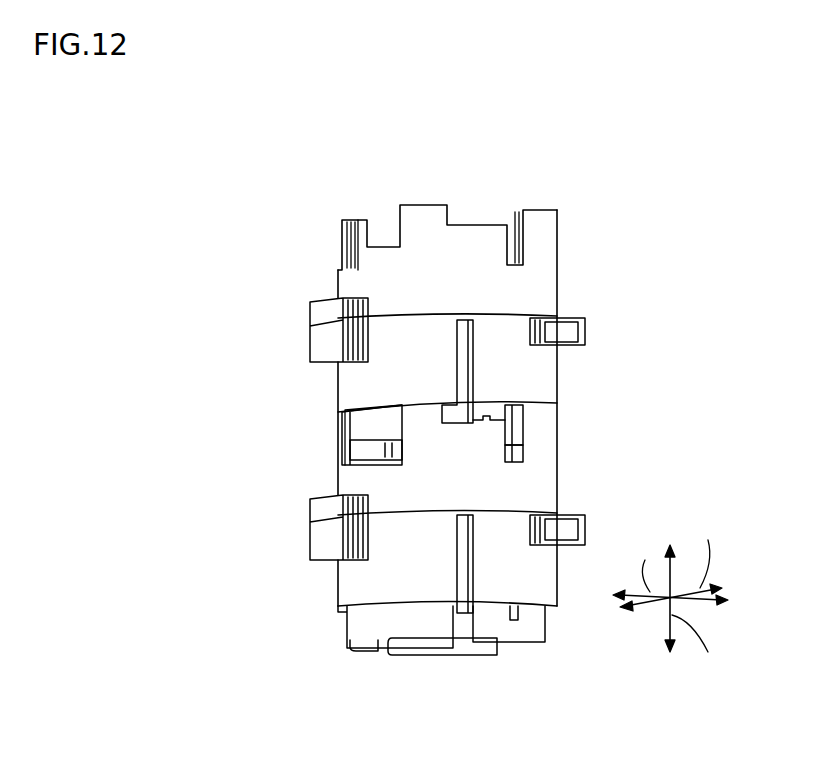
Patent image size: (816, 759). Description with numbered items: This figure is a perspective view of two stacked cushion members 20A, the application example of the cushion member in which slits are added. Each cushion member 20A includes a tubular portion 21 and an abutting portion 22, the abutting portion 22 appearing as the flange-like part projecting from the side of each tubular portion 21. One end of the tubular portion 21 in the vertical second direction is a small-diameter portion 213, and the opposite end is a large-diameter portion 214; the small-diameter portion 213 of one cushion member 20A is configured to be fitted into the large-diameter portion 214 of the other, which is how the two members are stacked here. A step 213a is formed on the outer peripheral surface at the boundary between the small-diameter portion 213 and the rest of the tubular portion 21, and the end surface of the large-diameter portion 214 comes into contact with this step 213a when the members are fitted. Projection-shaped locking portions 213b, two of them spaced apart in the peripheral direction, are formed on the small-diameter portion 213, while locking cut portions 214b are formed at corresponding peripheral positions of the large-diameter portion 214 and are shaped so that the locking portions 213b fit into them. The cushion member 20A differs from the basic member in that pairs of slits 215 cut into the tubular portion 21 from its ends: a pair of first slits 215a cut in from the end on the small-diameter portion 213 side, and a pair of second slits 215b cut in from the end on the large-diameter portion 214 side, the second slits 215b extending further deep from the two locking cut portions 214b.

The cushion member 20A is at (300, 268).
The tubular portion 21 is at (332, 378).
The abutting portion 22 is at (308, 333).
The small-diameter portion 213 is at (380, 428).
The step 213a is at (343, 433).
The locking portions 213b is at (445, 403).
The large-diameter portion 214 is at (343, 450).
The locking cut portions 214b is at (515, 428).
The slits 215 is at (530, 509).
The first slits 215a is at (436, 403).
The second slits 215b is at (514, 458).